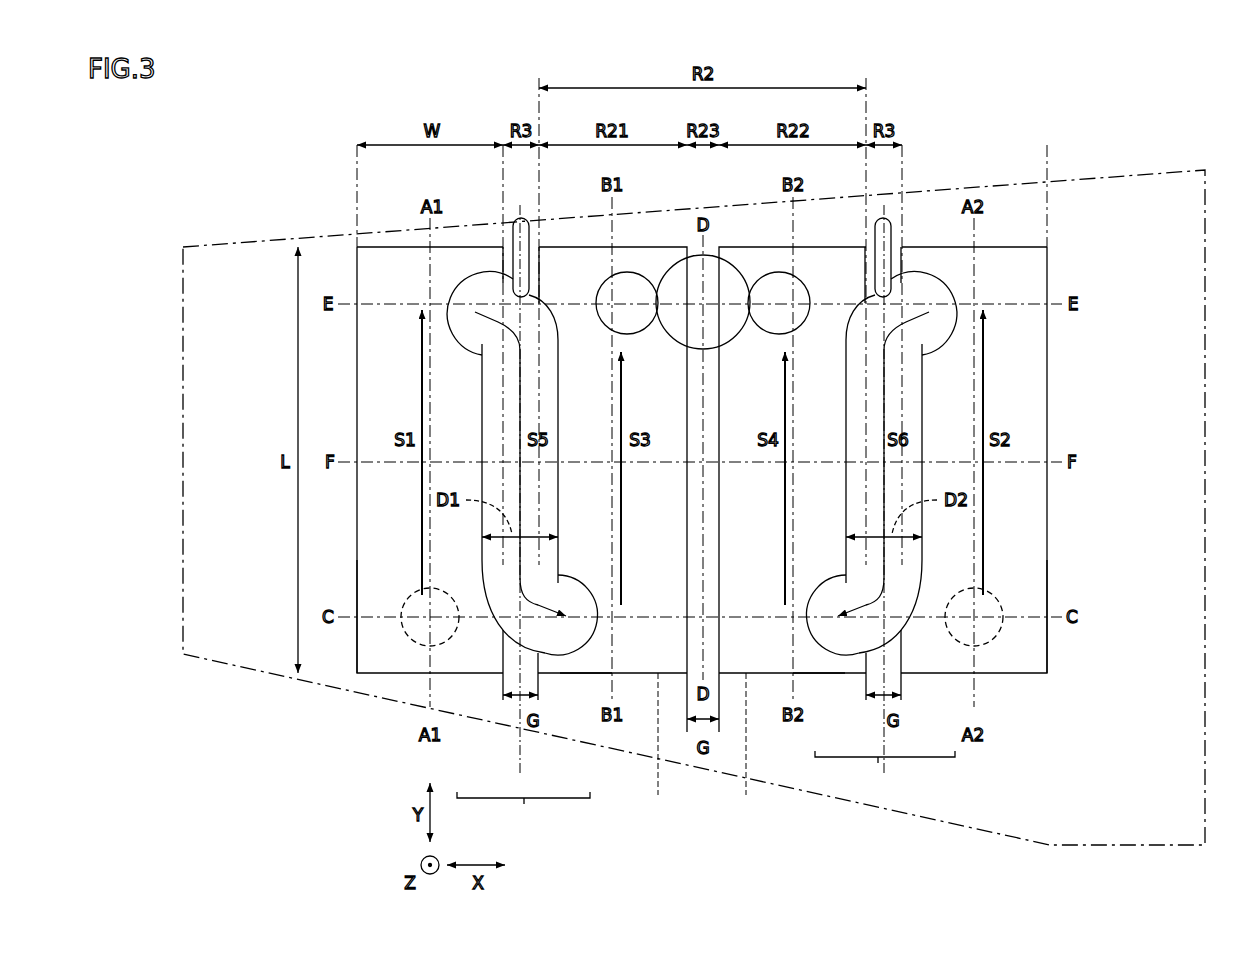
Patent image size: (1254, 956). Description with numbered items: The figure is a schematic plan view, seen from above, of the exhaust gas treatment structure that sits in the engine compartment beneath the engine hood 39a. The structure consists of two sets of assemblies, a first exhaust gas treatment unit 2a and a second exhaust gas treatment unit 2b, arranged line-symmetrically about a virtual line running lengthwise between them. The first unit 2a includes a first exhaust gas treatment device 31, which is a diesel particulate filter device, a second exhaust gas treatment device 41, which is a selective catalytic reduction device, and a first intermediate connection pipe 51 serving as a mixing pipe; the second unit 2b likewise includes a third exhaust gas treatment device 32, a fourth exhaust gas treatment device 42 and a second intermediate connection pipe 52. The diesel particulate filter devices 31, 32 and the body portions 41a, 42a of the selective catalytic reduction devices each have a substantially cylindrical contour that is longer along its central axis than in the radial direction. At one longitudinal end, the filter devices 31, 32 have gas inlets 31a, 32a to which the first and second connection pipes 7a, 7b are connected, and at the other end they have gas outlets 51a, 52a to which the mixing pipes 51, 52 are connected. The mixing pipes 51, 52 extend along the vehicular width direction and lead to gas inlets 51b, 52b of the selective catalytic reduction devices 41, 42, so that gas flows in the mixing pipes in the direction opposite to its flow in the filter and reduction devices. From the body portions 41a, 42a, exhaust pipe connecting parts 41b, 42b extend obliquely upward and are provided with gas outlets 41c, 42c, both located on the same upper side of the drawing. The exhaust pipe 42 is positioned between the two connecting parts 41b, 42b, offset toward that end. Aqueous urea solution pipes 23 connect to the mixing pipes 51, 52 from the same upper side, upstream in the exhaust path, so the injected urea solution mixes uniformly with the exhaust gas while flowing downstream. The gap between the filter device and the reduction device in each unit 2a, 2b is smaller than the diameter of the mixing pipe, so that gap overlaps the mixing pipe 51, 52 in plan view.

The engine hood 39a is at (265, 240).
The first exhaust gas treatment device 31 is at (477, 655).
The third exhaust gas treatment device 32 is at (930, 657).
The gas inlet 31a is at (402, 636).
The gas inlet 32a is at (1002, 636).
The first connection pipe 7a is at (412, 645).
The second connection pipe 7b is at (992, 645).
The second exhaust gas treatment device 41 is at (590, 657).
The fourth exhaust gas treatment device 42 is at (814, 660).
The body portion 41a is at (633, 675).
The body portion 42a is at (762, 675).
The exhaust pipe connecting part 41b is at (660, 747).
The exhaust pipe connecting part 42b is at (748, 747).
The gas outlet 41c is at (645, 288).
The gas outlet 42c is at (761, 288).
The first intermediate connection pipe 51 is at (522, 487).
The second intermediate connection pipe 52 is at (882, 474).
The gas outlet 51a is at (457, 275).
The gas outlet 52a is at (946, 275).
The gas inlet 51b is at (570, 657).
The gas inlet 52b is at (834, 657).
The aqueous urea solution pipe 23 is at (518, 216).
The first exhaust gas treatment unit 2a is at (523, 812).
The second exhaust gas treatment unit 2b is at (885, 771).